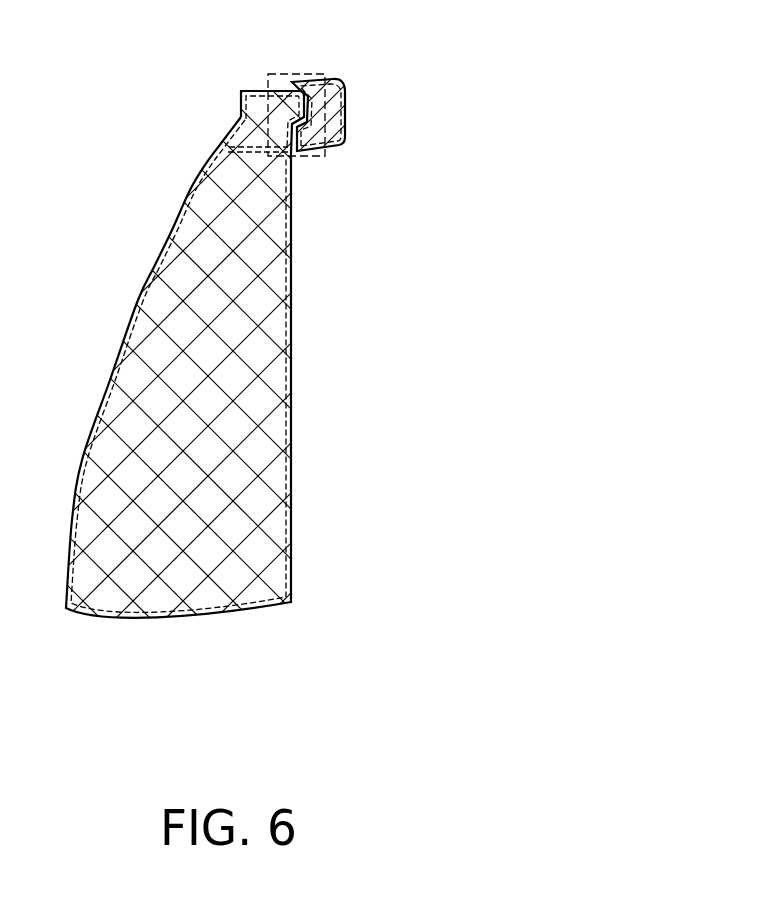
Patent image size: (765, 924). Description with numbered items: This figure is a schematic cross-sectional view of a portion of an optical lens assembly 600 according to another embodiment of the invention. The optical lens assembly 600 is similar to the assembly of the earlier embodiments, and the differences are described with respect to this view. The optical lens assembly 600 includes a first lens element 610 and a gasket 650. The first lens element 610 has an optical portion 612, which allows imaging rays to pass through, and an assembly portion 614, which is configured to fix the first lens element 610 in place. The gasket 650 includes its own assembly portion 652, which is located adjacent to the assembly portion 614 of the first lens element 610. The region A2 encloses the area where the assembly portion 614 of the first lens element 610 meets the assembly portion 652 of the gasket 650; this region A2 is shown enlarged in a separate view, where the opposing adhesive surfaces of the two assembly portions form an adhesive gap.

The optical lens assembly 600 is at (342, 653).
The first lens element 610 is at (187, 575).
The optical portion 612 is at (180, 213).
The assembly portion 614 is at (232, 124).
The gasket 650 is at (332, 129).
The assembly portion 652 is at (338, 108).
The region A2 is at (294, 73).